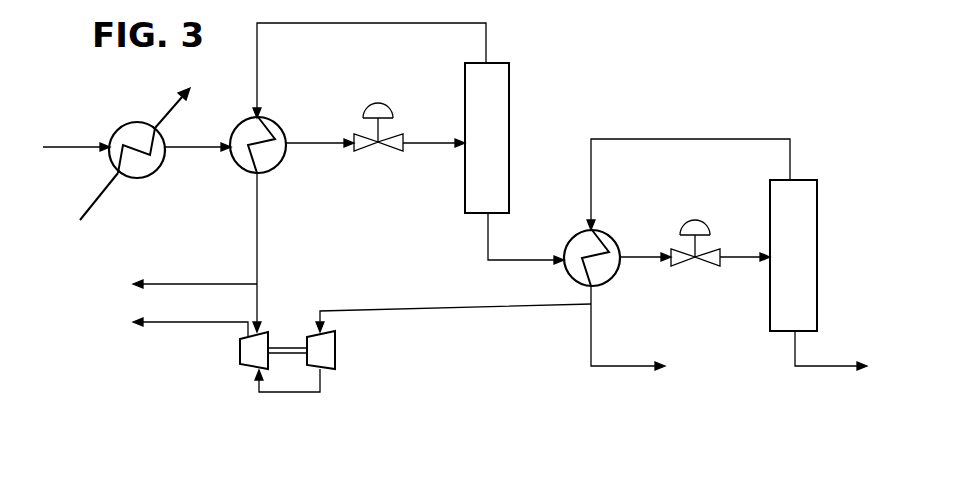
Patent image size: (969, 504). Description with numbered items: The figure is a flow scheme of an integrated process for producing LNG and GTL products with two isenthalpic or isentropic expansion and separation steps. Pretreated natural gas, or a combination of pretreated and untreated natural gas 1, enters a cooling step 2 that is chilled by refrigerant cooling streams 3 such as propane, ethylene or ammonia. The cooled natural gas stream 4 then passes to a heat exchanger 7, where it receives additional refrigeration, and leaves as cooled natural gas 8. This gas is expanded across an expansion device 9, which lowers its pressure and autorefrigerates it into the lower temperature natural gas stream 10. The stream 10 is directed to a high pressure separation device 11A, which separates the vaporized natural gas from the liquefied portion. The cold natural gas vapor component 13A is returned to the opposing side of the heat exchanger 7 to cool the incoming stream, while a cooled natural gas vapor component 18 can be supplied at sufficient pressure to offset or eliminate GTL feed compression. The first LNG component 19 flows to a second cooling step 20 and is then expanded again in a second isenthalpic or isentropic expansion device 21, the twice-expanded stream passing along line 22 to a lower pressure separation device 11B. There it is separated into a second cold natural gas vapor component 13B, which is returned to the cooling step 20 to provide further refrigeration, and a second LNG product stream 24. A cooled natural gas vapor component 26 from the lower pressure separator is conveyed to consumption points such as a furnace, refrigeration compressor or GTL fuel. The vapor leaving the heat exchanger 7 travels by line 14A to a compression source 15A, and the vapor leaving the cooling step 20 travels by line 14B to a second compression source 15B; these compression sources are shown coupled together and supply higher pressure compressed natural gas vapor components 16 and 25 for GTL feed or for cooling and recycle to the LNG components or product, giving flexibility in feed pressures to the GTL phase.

The natural gas 1 is at (73, 147).
The cooling step 2 is at (160, 168).
The cooling streams 3 is at (83, 205).
The natural gas stream 4 is at (192, 147).
The heat exchanger 7 is at (283, 158).
The cooled natural gas 8 is at (323, 140).
The expansion device 9 is at (365, 150).
The lower temperature natural gas stream 10 is at (440, 140).
The separation device 11A is at (510, 103).
The cold natural gas vapor component 13A is at (308, 24).
The first exchanger outlet to turbine line 14A is at (257, 248).
The second exchanger outlet to turbine line 14B is at (385, 311).
The compression source 15A is at (240, 350).
The compression source 15B is at (337, 348).
The compressed natural gas vapor component 16 is at (320, 373).
The cooled natural gas vapor component 18 is at (188, 284).
The first LNG component 19 is at (510, 260).
The cooling step 20 is at (614, 275).
The isenthalpic or isentropic expansion device 21 is at (685, 268).
The second column feed line 22 is at (748, 253).
The second LNG product stream 24 is at (820, 365).
The compressed natural gas vapor component 25 is at (173, 322).
The cooled natural gas vapor component 26 is at (633, 364).
The lower pressure separation device 11B is at (852, 254).
The second cold natural gas vapor component 13B is at (632, 139).